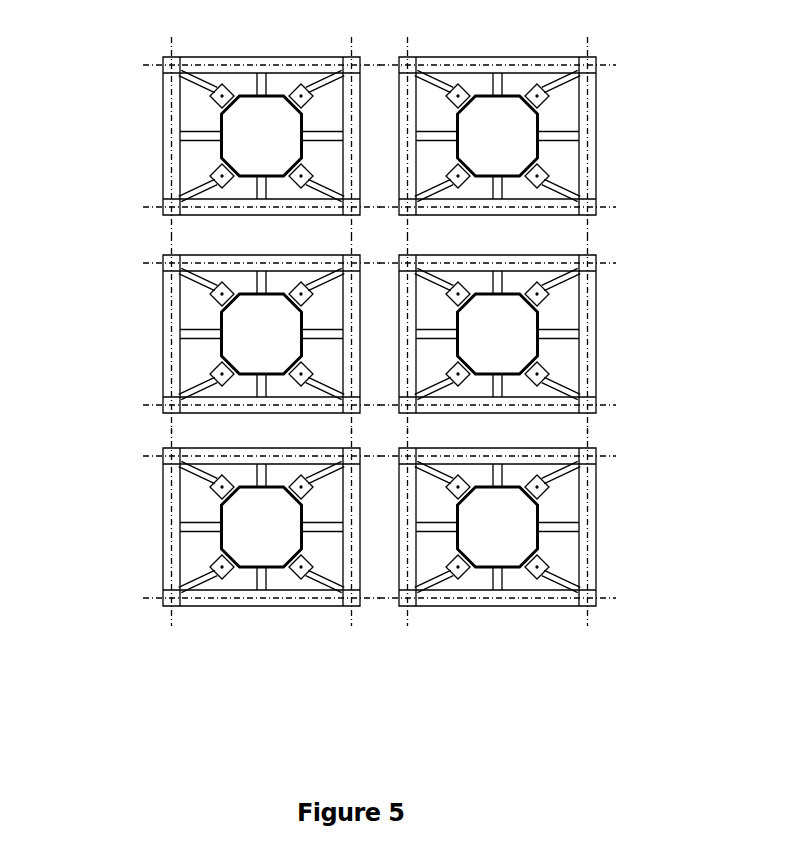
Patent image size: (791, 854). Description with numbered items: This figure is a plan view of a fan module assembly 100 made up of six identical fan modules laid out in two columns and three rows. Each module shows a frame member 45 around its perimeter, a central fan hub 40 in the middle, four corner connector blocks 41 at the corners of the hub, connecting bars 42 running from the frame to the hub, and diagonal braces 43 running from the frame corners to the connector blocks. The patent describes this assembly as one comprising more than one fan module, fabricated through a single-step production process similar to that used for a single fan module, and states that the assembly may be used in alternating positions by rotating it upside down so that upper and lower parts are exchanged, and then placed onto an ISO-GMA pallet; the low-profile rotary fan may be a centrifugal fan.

The modular building system assembly 100 is at (138, 690).
The fan module assembly 40 is at (221, 152).
The fan module assembly 41 is at (547, 180).
The fan module assembly 42 is at (191, 135).
The fan module assembly 43 is at (186, 74).
The fan module assembly 45 is at (258, 63).